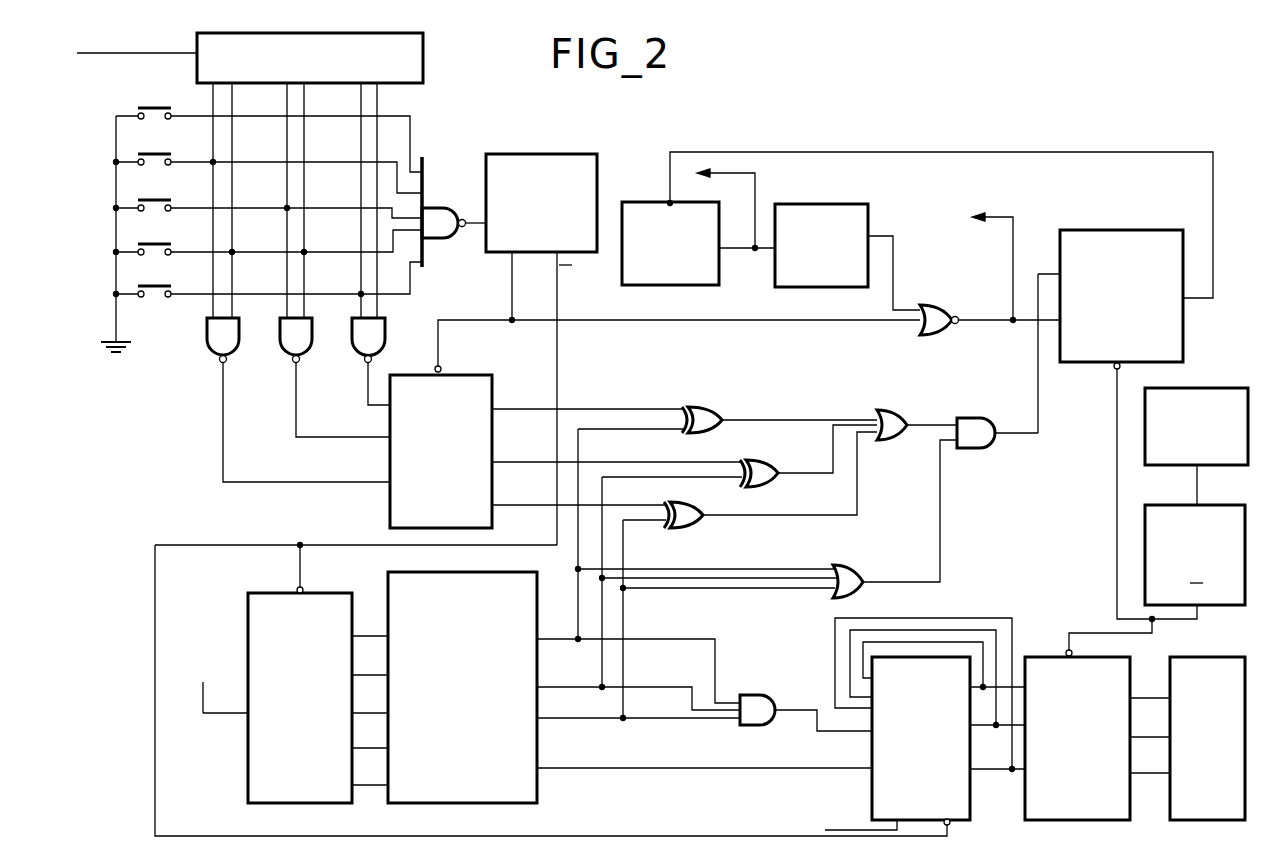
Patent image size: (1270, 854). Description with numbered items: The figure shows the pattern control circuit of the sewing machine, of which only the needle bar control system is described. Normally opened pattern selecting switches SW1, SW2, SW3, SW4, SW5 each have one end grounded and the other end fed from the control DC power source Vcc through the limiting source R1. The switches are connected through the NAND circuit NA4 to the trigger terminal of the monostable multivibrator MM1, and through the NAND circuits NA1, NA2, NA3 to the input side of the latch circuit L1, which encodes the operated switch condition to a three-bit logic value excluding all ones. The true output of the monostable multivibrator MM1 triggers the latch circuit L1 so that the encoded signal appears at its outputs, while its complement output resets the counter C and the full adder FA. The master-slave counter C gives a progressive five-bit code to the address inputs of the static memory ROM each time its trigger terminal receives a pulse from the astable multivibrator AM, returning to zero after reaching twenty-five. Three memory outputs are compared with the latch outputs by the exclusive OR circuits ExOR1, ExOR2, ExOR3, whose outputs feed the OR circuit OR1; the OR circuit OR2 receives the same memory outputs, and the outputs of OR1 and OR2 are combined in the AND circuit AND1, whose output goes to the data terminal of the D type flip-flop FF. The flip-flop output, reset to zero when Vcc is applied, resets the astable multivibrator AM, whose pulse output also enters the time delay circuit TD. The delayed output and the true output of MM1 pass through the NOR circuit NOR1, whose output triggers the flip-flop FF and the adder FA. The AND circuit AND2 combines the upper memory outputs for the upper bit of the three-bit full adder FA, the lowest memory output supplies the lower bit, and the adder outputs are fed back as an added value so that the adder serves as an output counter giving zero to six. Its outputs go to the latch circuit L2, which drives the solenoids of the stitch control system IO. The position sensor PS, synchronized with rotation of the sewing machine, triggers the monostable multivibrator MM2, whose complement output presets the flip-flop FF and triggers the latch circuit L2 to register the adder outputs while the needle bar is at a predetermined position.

The control DC power source Vcc is at (137, 43).
The limiting source R1 is at (310, 175).
The pattern selecting switch SW1 is at (269, 128).
The pattern selecting switch SW2 is at (268, 161).
The pattern selecting switch SW3 is at (268, 197).
The pattern selecting switch SW4 is at (268, 237).
The pattern selecting switch SW5 is at (268, 279).
The NAND circuit NA1 is at (298, 400).
The NAND circuit NA2 is at (335, 377).
The NAND circuit NA3 is at (392, 352).
The NAND circuit NA4 is at (454, 212).
The latch circuit L1 is at (655, 424).
The monostable multivibrator MM1 is at (541, 349).
The astable multivibrator AM is at (917, 225).
The time delay circuit TD is at (821, 245).
The NOR circuit NOR1 is at (984, 336).
The D type flip-flop circuit FF is at (1117, 440).
The exclusive OR circuit ExOR1 is at (750, 494).
The exclusive OR circuit ExOR2 is at (739, 456).
The exclusive OR circuit ExOR3 is at (727, 406).
The OR circuit OR1 is at (912, 410).
The OR circuit OR2 is at (767, 519).
The AND circuit AND1 is at (991, 447).
The AND circuit AND2 is at (797, 700).
The counter C is at (286, 674).
The static memory ROM is at (630, 687).
The master-slave type 3-bit full adder FA is at (912, 724).
The latch circuit L2 is at (1097, 735).
The stitch control system IO is at (1207, 738).
The position sensor PS is at (1196, 446).
The monostable multivibrator MM2 is at (1195, 555).